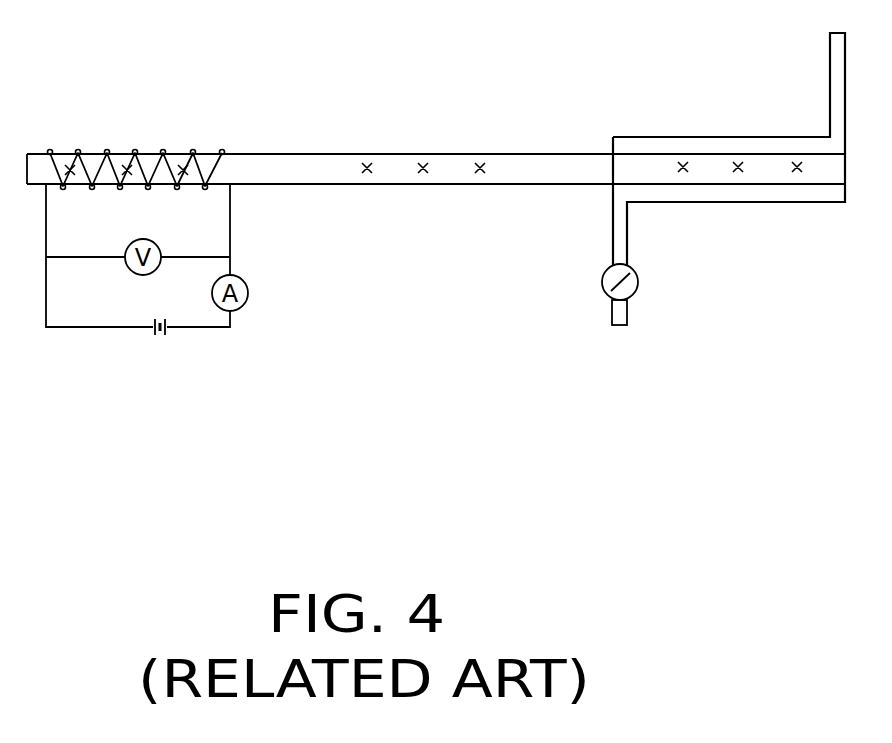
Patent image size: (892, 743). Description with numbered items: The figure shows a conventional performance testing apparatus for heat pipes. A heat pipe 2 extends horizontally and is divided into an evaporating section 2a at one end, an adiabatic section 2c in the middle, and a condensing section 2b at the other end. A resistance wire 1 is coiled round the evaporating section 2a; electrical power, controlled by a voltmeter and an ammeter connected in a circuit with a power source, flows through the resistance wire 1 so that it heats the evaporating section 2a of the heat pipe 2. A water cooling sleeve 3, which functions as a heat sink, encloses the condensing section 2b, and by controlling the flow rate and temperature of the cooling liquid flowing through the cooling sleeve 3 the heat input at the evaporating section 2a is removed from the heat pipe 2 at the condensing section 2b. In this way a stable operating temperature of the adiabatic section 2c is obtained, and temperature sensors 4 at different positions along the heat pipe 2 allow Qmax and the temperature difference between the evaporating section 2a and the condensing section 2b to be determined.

The resistance wire 1 is at (163, 153).
The heat pipe 2 is at (275, 154).
The evaporating section 2a is at (97, 163).
The condensing section 2b is at (668, 165).
The adiabatic section 2c is at (453, 168).
The water cooling sleeve 3 is at (769, 150).
The temperature sensors 4 is at (369, 165).